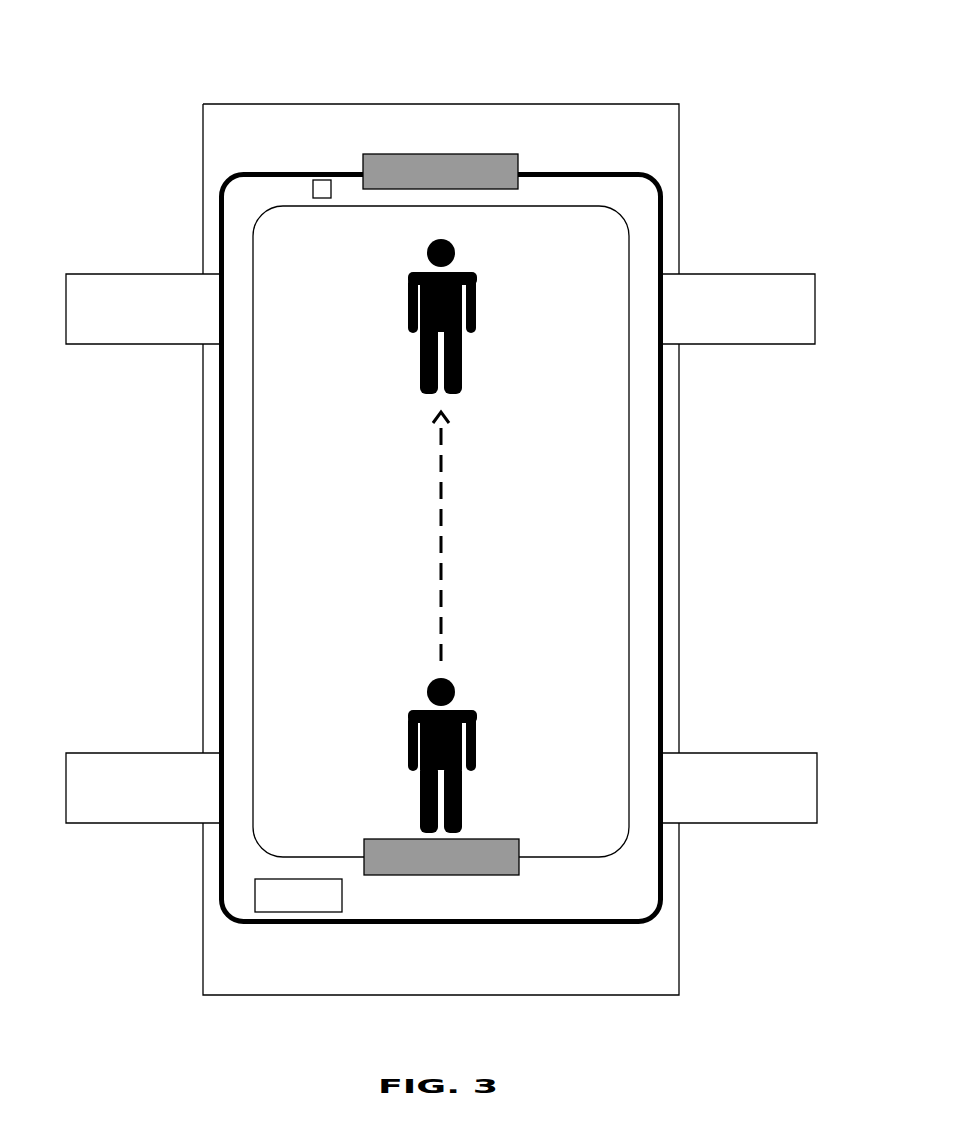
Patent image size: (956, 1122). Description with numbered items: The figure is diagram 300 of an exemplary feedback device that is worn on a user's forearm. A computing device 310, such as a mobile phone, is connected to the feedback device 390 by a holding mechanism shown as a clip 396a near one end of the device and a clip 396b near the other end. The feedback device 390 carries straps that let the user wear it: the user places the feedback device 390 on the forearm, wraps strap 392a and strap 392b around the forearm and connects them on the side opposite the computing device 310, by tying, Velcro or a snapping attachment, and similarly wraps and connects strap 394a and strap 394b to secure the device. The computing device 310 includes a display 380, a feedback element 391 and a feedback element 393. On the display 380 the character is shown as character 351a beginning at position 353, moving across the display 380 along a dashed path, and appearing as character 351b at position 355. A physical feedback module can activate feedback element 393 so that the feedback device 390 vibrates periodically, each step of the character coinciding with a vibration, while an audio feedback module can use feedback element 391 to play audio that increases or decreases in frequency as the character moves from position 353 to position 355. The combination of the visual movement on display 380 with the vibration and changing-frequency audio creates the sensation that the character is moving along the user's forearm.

The diagram 300 is at (138, 65).
The feedback device 390 is at (405, 103).
The computing device 310 is at (651, 240).
The display 380 is at (612, 558).
The clip 396a is at (499, 155).
The clip 396b is at (512, 869).
The feedback element 393 is at (321, 188).
The feedback element 391 is at (303, 894).
The strap 392a is at (168, 290).
The strap 392b is at (757, 292).
The strap 394a is at (170, 765).
The strap 394b is at (763, 762).
The character 351a is at (466, 714).
The character 351b is at (466, 278).
The position 353 is at (421, 826).
The position 355 is at (421, 390).